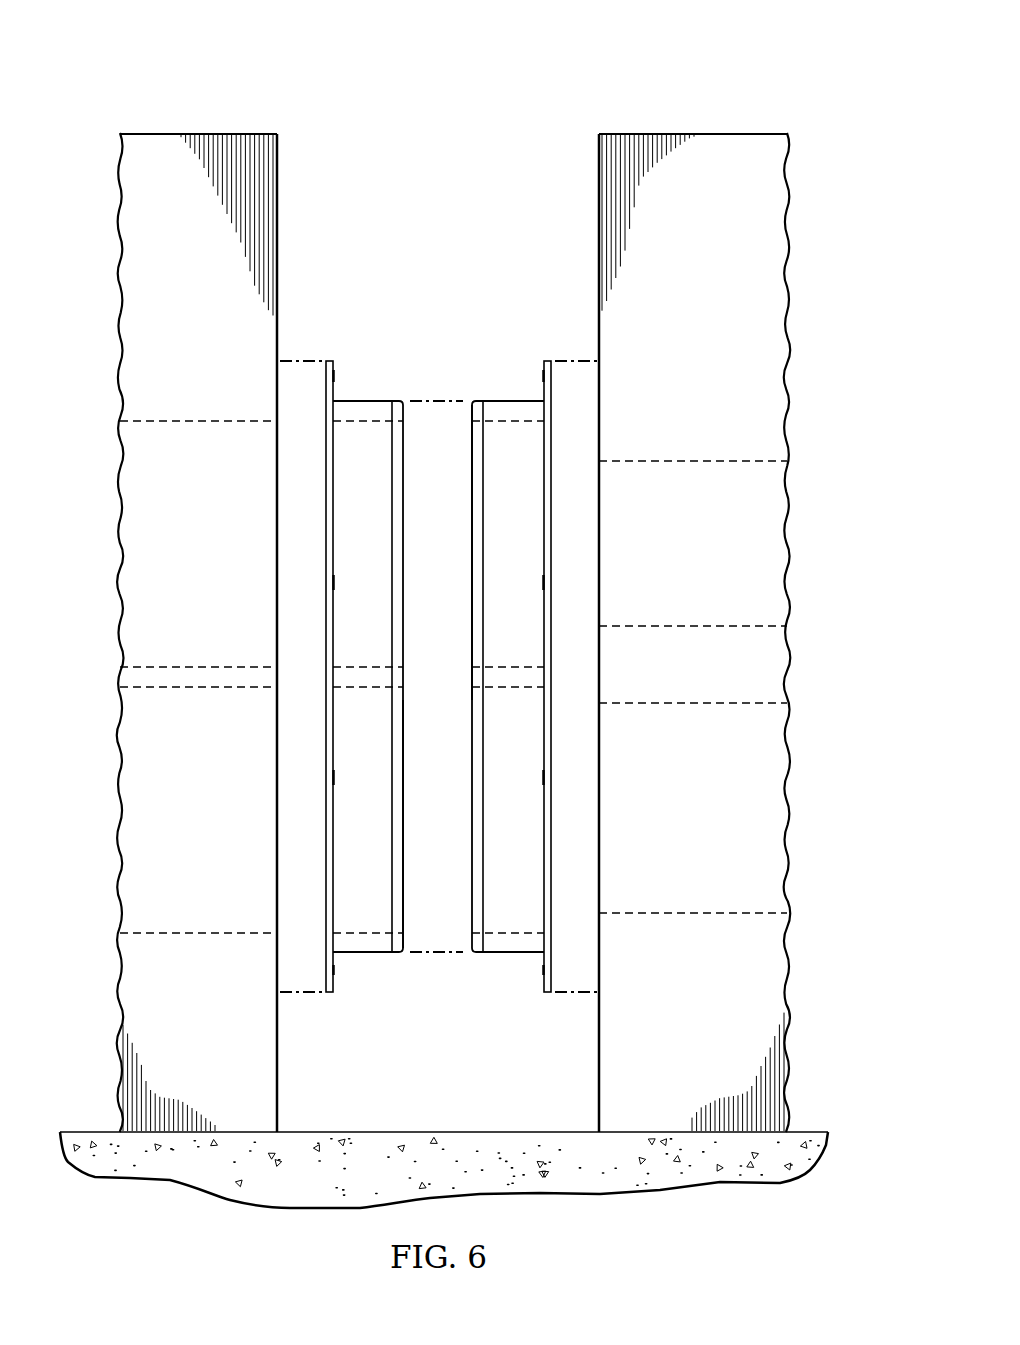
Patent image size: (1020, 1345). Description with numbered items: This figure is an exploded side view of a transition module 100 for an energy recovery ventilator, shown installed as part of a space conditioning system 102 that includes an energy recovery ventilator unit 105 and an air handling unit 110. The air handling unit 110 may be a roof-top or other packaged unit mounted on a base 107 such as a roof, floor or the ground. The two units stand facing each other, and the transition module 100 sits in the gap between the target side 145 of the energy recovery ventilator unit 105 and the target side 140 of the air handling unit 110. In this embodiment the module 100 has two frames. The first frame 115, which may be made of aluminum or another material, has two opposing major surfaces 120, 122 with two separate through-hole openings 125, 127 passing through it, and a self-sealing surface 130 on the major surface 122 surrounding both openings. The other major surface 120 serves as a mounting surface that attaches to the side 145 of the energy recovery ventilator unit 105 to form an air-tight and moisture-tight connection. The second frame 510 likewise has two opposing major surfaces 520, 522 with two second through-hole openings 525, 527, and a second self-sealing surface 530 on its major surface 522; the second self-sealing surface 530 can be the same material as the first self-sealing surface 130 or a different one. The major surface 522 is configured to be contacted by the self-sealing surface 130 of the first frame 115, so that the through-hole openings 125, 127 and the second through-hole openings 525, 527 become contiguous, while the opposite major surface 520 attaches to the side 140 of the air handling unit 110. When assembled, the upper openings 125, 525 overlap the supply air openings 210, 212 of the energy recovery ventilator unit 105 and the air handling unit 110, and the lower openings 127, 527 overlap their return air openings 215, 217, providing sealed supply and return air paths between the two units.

The space conditioning system 102 is at (776, 72).
The energy recovery ventilator unit 105 is at (155, 132).
The air handling unit 110 is at (718, 132).
The target side 145 is at (278, 183).
The target side 140 is at (597, 183).
The transition module 100 is at (348, 322).
The frame 115 is at (360, 401).
The second frame 510 is at (512, 401).
The major surface 120 is at (336, 963).
The major surface 520 is at (542, 963).
The through-hole opening 125 is at (370, 463).
The through-hole opening 127 is at (370, 731).
The second through-hole opening 525 is at (505, 528).
The second through-hole opening 527 is at (505, 793).
The major surface 122 is at (405, 810).
The self-sealing surface 130 is at (405, 880).
The major surface 522 is at (483, 618).
The second self-sealing surface 530 is at (472, 602).
The supply air opening 210 is at (155, 470).
The return air opening 215 is at (155, 737).
The supply air opening 212 is at (748, 505).
The return air opening 217 is at (748, 768).
The base 107 is at (460, 1132).